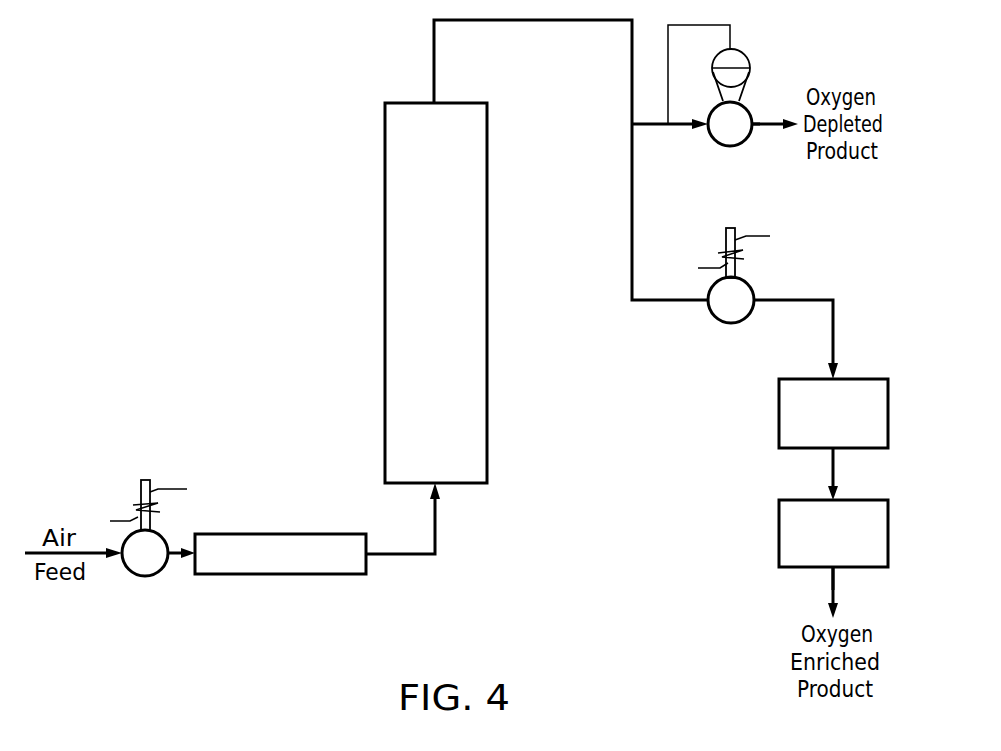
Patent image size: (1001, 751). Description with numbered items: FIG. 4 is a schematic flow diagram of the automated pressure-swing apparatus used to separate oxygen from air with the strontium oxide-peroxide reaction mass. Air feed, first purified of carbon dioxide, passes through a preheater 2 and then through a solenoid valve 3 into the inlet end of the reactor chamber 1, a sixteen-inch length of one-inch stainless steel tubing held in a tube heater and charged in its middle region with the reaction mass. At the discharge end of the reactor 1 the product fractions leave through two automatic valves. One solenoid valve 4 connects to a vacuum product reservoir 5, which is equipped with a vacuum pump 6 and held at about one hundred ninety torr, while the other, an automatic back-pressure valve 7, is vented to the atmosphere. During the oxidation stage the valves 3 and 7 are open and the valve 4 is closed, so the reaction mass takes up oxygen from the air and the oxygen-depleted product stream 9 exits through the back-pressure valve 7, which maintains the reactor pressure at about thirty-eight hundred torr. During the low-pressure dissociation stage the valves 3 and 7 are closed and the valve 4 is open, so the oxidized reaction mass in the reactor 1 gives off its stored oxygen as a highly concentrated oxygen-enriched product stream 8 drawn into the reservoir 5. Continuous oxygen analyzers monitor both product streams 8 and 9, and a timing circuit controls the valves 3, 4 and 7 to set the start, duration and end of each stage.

The reactor chamber 1 is at (392, 311).
The preheater 2 is at (277, 542).
The solenoid valve 3 is at (156, 540).
The solenoid valve 4 is at (727, 325).
The vacuum product reservoir 5 is at (783, 421).
The vacuum pump 6 is at (788, 543).
The automatic back-pressure valve 7 is at (748, 108).
The product stream 8 is at (836, 592).
The oxygen-depleted product stream 9 is at (765, 125).